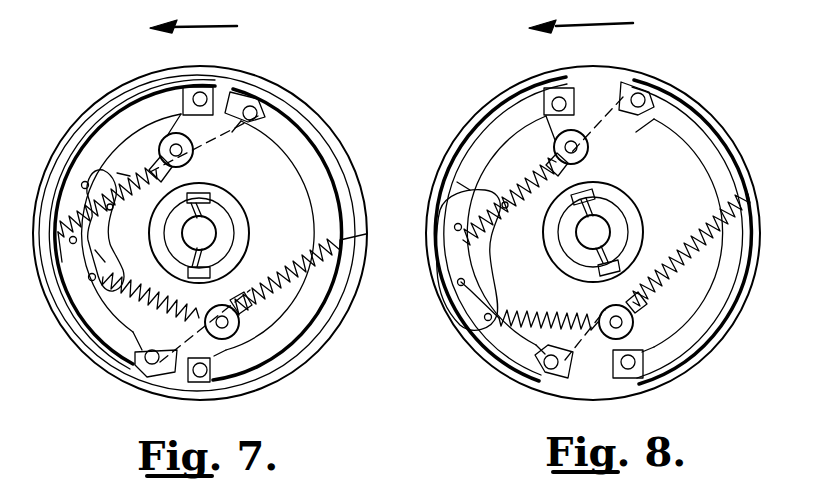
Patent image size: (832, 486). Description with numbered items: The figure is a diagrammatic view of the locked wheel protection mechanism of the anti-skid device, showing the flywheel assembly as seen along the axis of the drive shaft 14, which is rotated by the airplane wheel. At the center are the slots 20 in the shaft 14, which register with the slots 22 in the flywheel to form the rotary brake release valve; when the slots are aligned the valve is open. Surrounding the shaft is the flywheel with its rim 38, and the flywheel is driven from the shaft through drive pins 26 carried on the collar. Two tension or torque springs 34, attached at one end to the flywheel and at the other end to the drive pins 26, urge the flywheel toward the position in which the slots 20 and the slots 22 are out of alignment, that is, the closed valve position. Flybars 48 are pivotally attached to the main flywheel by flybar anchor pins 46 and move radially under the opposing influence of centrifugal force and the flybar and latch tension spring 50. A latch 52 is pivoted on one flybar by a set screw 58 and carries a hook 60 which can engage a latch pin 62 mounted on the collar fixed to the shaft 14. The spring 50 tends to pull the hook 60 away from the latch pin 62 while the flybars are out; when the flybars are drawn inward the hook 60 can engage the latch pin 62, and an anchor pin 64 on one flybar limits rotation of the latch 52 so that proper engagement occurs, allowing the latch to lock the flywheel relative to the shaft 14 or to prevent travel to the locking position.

In FIG. 7, the drive shaft 14 is at (217, 213).
In FIG. 8, the drive shaft 14 is at (613, 213).
In FIG. 7, the slots in the shaft 20 is at (193, 208).
In FIG. 8, the slots in the shaft 20 is at (596, 197).
In FIG. 7, the slots in the flywheel 22 is at (213, 193).
In FIG. 8, the slots in the flywheel 22 is at (593, 187).
In FIG. 7, the drive pins 26 is at (173, 133).
In FIG. 8, the drive pins 26 is at (556, 138).
In FIG. 7, the tension or torque springs 34 is at (108, 165).
In FIG. 8, the tension or torque springs 34 is at (515, 165).
In FIG. 7, the rim 38 is at (327, 130).
In FIG. 8, the rim 38 is at (696, 107).
In FIG. 7, the flybar anchor pins 46 is at (200, 97).
In FIG. 8, the flybar anchor pins 46 is at (559, 100).
In FIG. 7, the flybars 48 is at (130, 123).
In FIG. 8, the flybars 48 is at (519, 117).
In FIG. 7, the flybar and latch tension spring 50 is at (138, 362).
In FIG. 8, the flybar and latch tension spring 50 is at (530, 355).
In FIG. 7, the latch 52 is at (85, 275).
In FIG. 8, the latch 52 is at (485, 300).
In FIG. 7, the set screw 58 is at (62, 262).
In FIG. 8, the set screw 58 is at (459, 282).
In FIG. 7, the hook 60 is at (98, 170).
In FIG. 8, the hook 60 is at (483, 190).
In FIG. 7, the latch pin 62 is at (110, 210).
In FIG. 8, the latch pin 62 is at (503, 203).
In FIG. 7, the anchor pin 64 is at (82, 182).
In FIG. 8, the anchor pin 64 is at (455, 224).